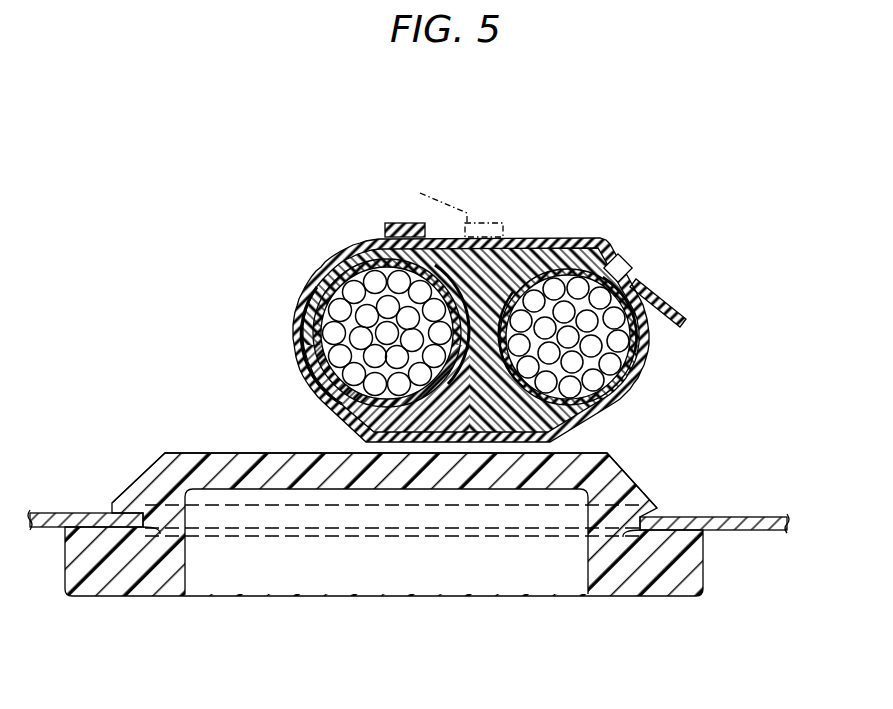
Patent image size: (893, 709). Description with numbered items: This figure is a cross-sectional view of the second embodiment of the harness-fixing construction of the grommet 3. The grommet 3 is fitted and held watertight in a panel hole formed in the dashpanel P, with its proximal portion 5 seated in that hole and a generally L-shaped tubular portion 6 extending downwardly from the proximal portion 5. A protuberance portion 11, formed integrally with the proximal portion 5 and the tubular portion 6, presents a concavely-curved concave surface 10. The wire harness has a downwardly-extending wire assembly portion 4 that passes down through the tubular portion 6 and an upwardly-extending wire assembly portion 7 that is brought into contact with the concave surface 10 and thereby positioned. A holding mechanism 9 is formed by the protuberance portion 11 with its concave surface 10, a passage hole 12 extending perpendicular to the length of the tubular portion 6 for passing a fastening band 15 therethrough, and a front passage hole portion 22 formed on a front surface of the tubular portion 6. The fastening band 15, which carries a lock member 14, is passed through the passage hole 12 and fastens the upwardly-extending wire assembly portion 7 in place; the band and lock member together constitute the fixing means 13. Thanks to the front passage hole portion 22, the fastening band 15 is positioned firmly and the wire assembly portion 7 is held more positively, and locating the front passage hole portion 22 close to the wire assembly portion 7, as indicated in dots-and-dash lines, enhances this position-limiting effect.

The grommet 3 is at (163, 598).
The downwardly-extending wire assembly portion 4 is at (316, 332).
The proximal portion 5 is at (192, 452).
The tubular portion 6 is at (298, 298).
The upwardly-extending wire assembly portion 7 is at (640, 372).
The holding mechanism 9 is at (573, 153).
The concave surface 10 is at (530, 275).
The protuberance portion 11 is at (507, 275).
The passage hole 12 is at (372, 243).
The fastening means 13 is at (745, 233).
The lock member 14 is at (630, 262).
The fastening band 15 is at (583, 240).
The front passage hole portion 22 is at (413, 223).
The dashpanel P is at (716, 517).